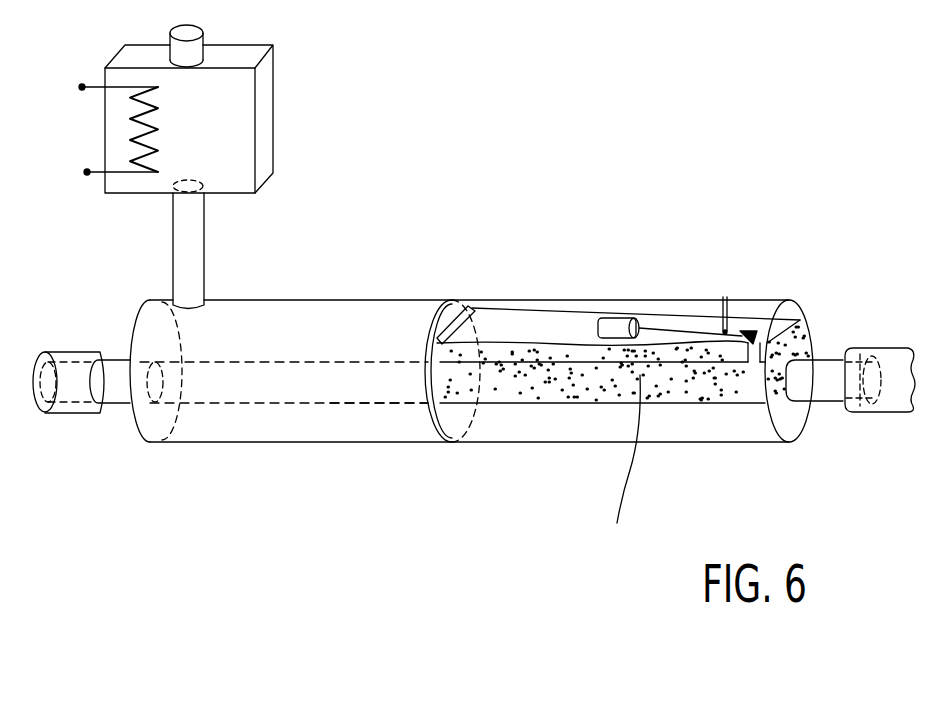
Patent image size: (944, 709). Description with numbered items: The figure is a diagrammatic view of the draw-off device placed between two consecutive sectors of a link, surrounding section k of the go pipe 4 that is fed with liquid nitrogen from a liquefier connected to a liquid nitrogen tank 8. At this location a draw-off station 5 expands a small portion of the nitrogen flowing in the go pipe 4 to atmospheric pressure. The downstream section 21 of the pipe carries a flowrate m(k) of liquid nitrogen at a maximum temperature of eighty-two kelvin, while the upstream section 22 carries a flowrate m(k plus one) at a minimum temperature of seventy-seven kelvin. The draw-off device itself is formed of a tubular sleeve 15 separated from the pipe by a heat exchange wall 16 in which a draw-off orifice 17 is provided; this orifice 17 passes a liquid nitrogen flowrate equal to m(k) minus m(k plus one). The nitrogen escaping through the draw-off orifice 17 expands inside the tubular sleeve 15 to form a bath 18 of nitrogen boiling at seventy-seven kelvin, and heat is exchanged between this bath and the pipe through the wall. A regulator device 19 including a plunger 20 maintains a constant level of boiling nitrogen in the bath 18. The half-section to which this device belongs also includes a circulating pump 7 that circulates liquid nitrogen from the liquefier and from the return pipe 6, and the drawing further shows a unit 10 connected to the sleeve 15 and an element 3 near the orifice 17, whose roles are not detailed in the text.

The orifice 3 is at (737, 343).
The go pipe 4 is at (565, 395).
The draw-off station 5 is at (527, 316).
The return pipe 6 is at (698, 330).
The circulating pump 7 is at (625, 330).
The liquid nitrogen tank 8 is at (297, 395).
The heating control unit 10 is at (264, 97).
The tubular sleeve 15 is at (348, 300).
The tube wall 16 is at (375, 402).
The draw-off orifice 17 is at (763, 348).
The bath 18 is at (632, 459).
The regulator device 19 is at (677, 330).
The plunger 20 is at (610, 323).
The downstream section 21 is at (105, 403).
The upstream section 22 is at (840, 393).